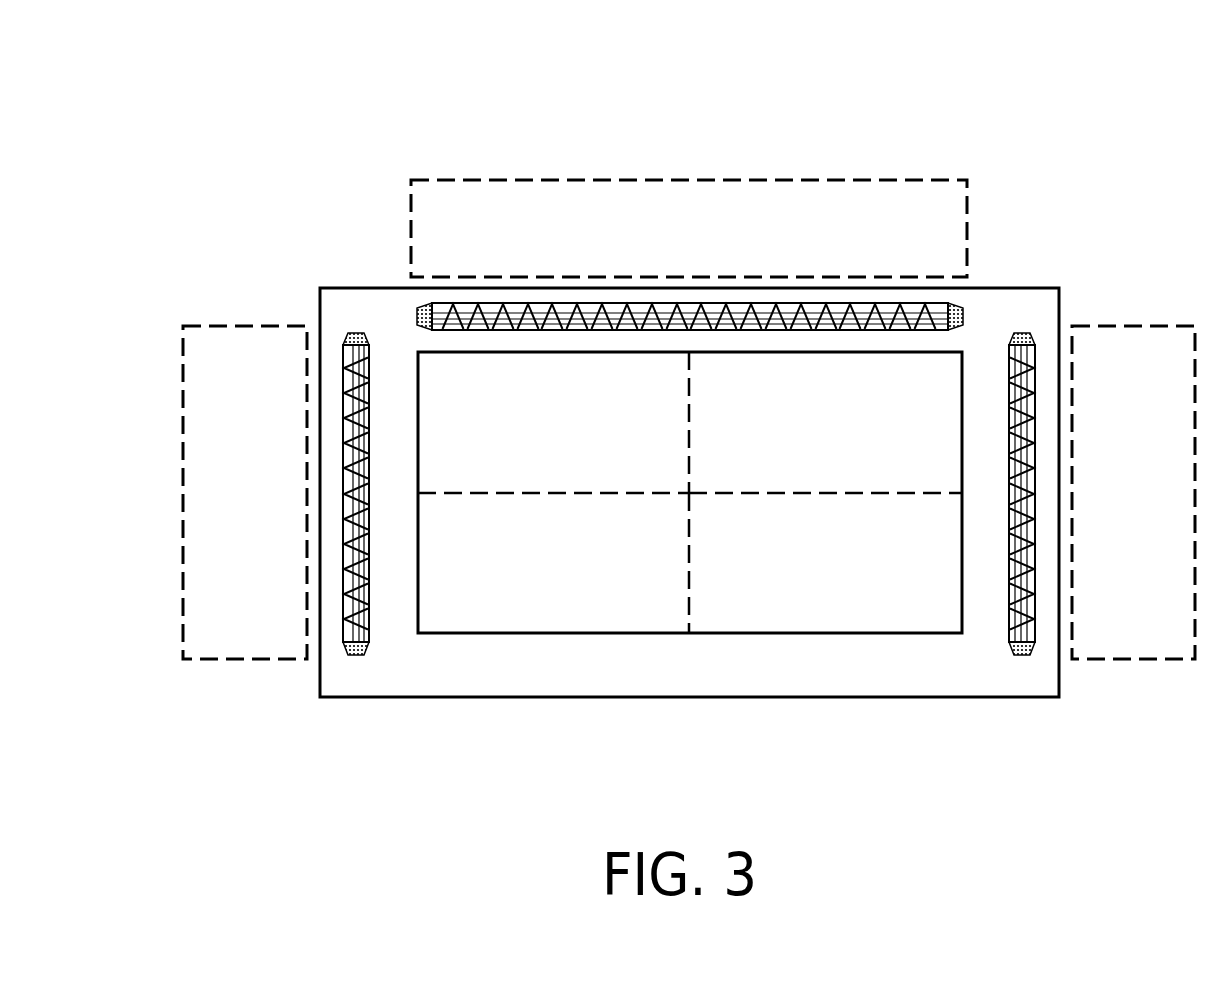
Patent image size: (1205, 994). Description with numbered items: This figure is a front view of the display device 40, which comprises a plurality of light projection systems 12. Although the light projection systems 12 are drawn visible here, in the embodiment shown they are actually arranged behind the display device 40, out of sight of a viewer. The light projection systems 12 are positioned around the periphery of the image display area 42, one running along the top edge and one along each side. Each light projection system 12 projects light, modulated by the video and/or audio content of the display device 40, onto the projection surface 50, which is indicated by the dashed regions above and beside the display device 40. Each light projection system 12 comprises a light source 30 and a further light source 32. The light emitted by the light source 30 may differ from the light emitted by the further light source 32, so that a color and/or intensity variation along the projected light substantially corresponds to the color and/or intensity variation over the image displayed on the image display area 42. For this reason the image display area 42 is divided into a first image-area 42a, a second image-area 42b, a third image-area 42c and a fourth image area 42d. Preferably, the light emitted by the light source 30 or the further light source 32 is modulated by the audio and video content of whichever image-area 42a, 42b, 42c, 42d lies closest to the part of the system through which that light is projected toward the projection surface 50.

The display device 40 is at (1145, 118).
The projection surface 50 is at (703, 243).
The image display area 42 is at (757, 623).
The first image-area 42a is at (575, 437).
The second image-area 42b is at (848, 437).
The third image-area 42c is at (575, 577).
The fourth image area 42d is at (848, 577).
The light source 30 is at (418, 312).
The light projection system 12 is at (790, 318).
The further light source 32 is at (963, 310).